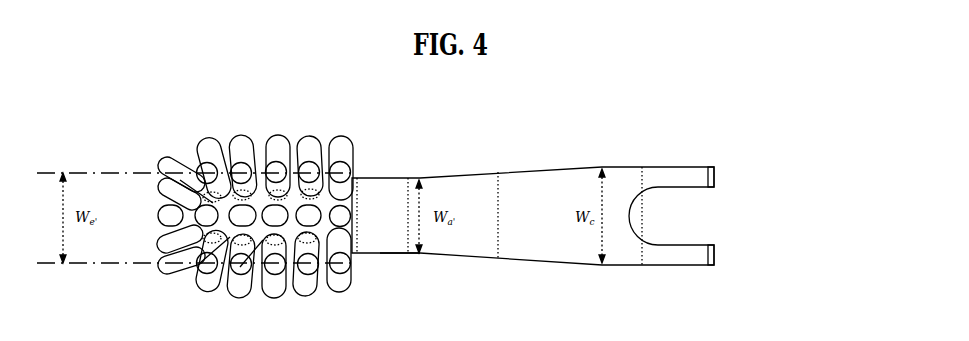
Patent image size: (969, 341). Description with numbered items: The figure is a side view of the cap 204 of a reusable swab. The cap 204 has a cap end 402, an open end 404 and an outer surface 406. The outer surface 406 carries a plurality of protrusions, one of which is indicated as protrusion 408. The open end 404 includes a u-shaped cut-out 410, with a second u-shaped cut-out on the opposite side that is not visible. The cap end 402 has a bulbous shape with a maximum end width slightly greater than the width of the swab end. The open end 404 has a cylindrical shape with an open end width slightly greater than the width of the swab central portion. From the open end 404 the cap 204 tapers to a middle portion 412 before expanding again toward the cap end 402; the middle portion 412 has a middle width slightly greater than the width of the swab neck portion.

The cap 204 is at (457, 172).
The cap end 402 is at (240, 193).
The open end 404 is at (714, 172).
The outer surface 406 is at (267, 193).
The protrusion 408 is at (178, 170).
The u-shaped cut-out 410 is at (632, 228).
The middle portion 412 is at (402, 254).